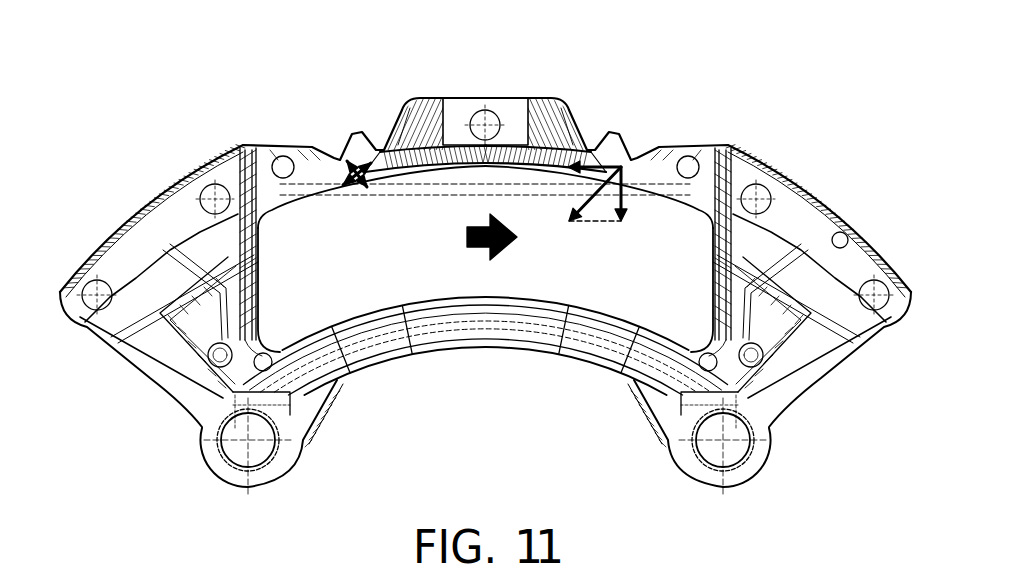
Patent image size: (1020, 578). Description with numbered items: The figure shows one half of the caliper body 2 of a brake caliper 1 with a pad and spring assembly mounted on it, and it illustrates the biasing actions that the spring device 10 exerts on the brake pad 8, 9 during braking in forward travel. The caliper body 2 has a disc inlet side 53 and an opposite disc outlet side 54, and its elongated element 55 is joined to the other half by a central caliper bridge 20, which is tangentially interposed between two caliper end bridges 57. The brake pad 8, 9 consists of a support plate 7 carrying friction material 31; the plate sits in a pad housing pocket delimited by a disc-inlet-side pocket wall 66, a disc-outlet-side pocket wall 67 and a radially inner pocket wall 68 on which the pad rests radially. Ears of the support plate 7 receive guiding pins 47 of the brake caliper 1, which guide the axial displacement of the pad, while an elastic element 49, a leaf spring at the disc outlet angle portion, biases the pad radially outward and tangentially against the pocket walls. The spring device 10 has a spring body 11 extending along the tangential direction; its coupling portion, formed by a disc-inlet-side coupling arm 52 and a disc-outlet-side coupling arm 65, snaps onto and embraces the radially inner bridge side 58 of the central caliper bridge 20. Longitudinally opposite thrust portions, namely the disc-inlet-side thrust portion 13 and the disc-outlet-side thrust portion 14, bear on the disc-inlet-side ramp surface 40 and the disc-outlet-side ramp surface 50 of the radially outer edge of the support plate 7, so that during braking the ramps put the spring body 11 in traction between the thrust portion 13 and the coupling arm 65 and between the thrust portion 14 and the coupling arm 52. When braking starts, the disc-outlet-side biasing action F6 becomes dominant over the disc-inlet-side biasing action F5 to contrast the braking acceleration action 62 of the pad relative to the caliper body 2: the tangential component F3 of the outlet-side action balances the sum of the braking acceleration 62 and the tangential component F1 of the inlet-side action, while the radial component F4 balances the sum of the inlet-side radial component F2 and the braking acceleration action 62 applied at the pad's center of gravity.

The brake caliper 1 is at (814, 128).
The caliper body 2 is at (122, 332).
The support plate 7 is at (700, 200).
The brake pad 8 is at (262, 150).
The brake pad 9 is at (262, 150).
The spring device 10 is at (590, 160).
The spring body 11 is at (630, 150).
The disc-inlet-side thrust portion 13 is at (335, 158).
The disc-outlet-side thrust portion 14 is at (665, 160).
The central caliper bridge 20 is at (455, 108).
The friction material 31 is at (375, 310).
The disc-inlet-side ramp surface 40 is at (85, 325).
The guiding pin 47 is at (268, 168).
The elastic element 49 is at (705, 385).
The disc-outlet-side ramp surface 50 is at (690, 170).
The disc-inlet-side coupling arm 52 is at (432, 120).
The disc inlet side 53 is at (140, 370).
The disc outlet side 54 is at (825, 370).
The elongated element 55 is at (642, 385).
The caliper end bridge 57 is at (130, 237).
The radially inner bridge side 58 is at (460, 150).
The braking acceleration action 62 is at (505, 258).
The disc-outlet-side coupling arm 65 is at (535, 110).
The disc-inlet-side pocket wall 66 is at (232, 255).
The disc-outlet-side pocket wall 67 is at (770, 235).
The radially inner pocket wall 68 is at (445, 300).
The tangential component of the disc-inlet-side biasing action F1 is at (347, 150).
The radial component of the disc-inlet-side biasing action F2 is at (345, 180).
The tangential component of the disc-outlet-side biasing action F3 is at (565, 215).
The radial component of the disc-outlet-side biasing action F4 is at (630, 228).
The disc-inlet-side biasing action F5 is at (360, 180).
The disc-outlet-side biasing action F6 is at (575, 228).